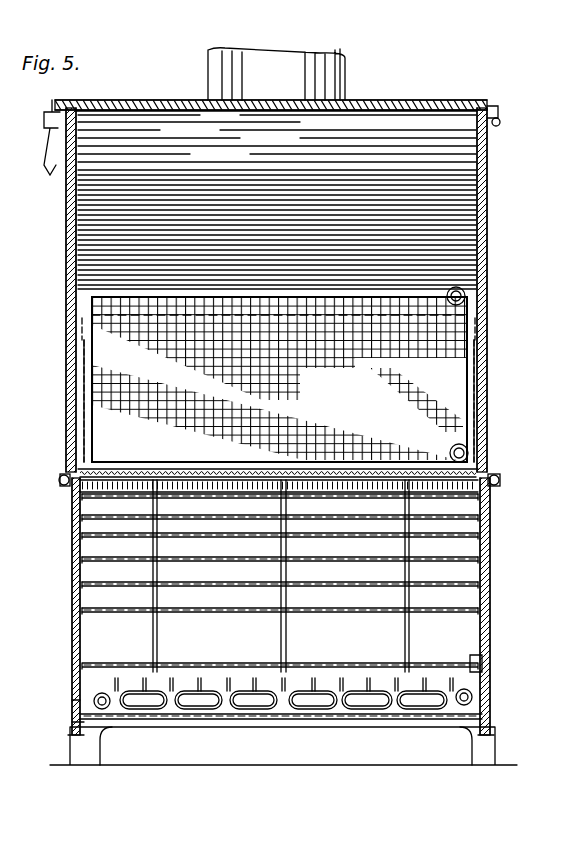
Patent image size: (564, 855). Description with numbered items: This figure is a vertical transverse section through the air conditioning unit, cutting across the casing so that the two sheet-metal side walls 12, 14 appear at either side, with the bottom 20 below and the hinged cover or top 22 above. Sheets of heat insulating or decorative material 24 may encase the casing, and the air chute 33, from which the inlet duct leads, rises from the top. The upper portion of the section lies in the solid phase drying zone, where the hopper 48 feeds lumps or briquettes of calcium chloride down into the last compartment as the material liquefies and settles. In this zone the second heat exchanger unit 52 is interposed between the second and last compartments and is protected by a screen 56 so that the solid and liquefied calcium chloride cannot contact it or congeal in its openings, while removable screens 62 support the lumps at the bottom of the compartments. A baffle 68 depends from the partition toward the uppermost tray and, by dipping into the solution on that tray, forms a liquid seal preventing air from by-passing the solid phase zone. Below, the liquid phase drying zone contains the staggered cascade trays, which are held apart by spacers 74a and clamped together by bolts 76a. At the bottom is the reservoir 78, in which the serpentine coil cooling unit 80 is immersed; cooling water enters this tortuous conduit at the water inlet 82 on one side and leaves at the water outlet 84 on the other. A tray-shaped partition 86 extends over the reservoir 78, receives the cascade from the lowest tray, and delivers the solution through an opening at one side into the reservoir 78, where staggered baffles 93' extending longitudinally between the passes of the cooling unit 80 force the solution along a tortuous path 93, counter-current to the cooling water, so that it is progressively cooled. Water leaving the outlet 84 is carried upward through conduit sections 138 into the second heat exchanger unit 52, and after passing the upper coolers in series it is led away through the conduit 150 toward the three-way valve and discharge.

The side wall 12 is at (62, 356).
The side wall 14 is at (493, 332).
The bottom 20 is at (283, 727).
The cover or top 22 is at (437, 100).
The heat insulating or decorative material 24 is at (490, 400).
The air chute 33 is at (322, 60).
The hopper 48 is at (461, 235).
The second heat exchanger unit 52 is at (128, 316).
The screen 56 is at (115, 396).
The removable screens 62 is at (121, 463).
The baffle 68 is at (125, 481).
The spacers 74a is at (290, 617).
The bolts 76a is at (282, 670).
The reservoir 78 is at (304, 675).
The serpentine coil cooling unit 80 is at (80, 710).
The water inlet 82 is at (104, 710).
The water outlet 84 is at (476, 697).
The partition 86 is at (462, 663).
The tortuous path 93 is at (156, 694).
The staggered baffles 93' is at (382, 717).
The conduit sections 138 is at (470, 455).
The conduit 150 is at (466, 294).